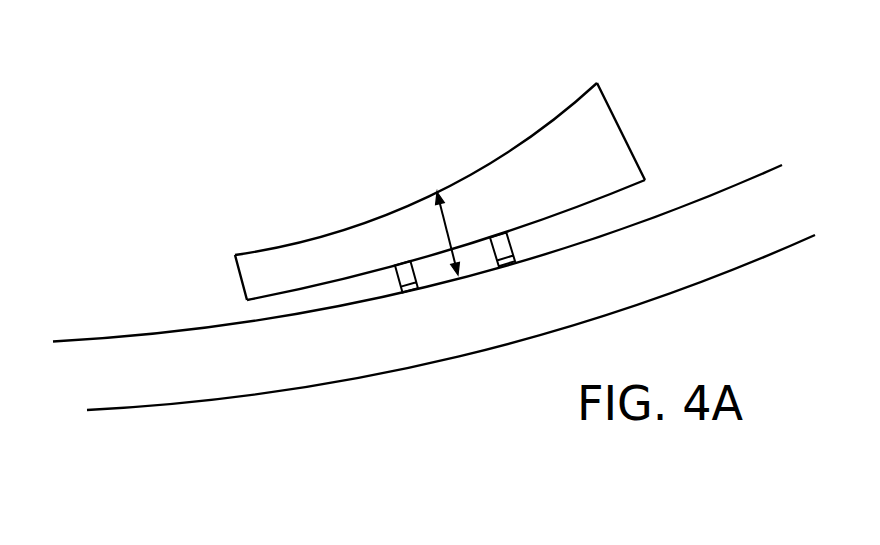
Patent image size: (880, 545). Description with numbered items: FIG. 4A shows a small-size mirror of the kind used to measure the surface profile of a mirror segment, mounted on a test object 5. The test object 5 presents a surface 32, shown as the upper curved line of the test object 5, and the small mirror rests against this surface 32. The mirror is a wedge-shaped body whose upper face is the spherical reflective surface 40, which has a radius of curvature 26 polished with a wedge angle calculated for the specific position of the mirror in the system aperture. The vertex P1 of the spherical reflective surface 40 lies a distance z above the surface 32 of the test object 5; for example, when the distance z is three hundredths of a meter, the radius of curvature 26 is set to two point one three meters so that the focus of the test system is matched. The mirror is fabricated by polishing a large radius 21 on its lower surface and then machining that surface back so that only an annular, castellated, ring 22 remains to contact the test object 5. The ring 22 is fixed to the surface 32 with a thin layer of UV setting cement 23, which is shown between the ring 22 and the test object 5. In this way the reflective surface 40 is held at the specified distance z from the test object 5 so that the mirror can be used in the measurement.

The test object 5 is at (764, 232).
The surface of the test object 32 is at (728, 188).
The spherical reflective surface 40 is at (396, 174).
The radius of curvature 26 is at (387, 212).
The large radius 21 is at (279, 283).
The annular, castellated, ring 22 is at (493, 270).
The UV setting cement 23 is at (498, 243).
The vertex of the spherical reflective surface P1 is at (437, 190).
The distance z is at (451, 233).